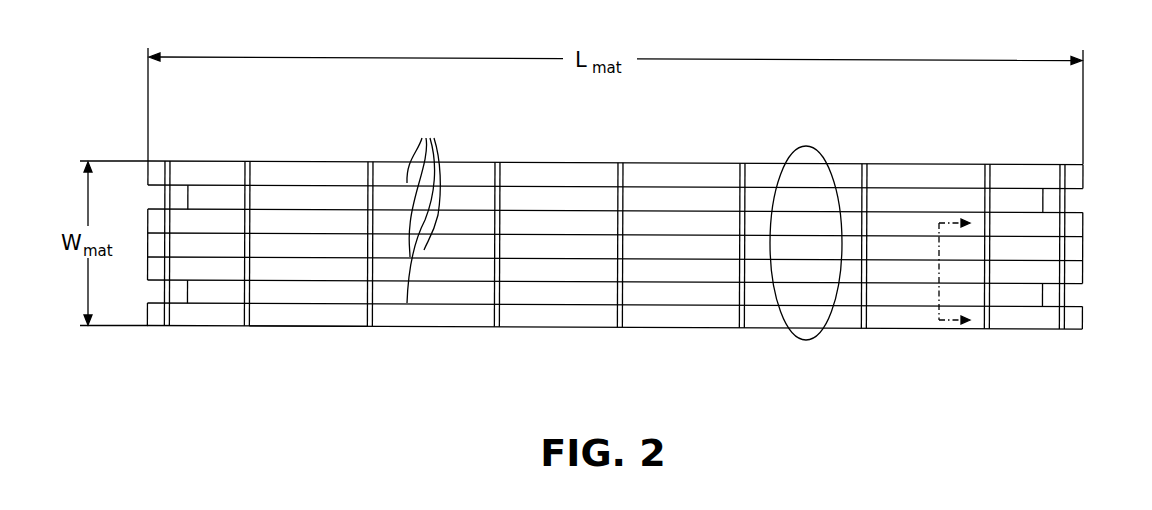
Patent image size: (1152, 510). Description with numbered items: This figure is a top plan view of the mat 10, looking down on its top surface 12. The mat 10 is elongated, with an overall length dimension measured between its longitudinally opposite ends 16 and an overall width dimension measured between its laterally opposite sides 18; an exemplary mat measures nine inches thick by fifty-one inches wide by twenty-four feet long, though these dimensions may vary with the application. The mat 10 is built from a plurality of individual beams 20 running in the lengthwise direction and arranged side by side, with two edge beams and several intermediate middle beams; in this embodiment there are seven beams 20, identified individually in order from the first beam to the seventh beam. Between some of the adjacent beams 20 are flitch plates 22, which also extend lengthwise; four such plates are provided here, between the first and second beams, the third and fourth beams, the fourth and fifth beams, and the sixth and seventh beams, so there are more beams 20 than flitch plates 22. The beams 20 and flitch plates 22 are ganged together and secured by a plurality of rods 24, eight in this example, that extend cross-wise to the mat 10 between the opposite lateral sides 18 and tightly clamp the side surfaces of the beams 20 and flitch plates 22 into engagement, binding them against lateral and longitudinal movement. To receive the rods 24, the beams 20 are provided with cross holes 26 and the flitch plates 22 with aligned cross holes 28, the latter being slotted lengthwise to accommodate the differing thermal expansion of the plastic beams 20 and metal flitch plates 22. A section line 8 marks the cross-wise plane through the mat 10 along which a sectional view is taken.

The section line 8- 8 is at (954, 276).
The mat 10 is at (620, 194).
The top surface 12 is at (665, 170).
The longitudinally opposite ends 16 is at (148, 315).
The laterally opposite sides 18 is at (281, 328).
The beams 20 is at (805, 148).
The flitch plates 22 is at (423, 209).
The rods 24 is at (248, 327).
The cross holes of the beams 26 is at (362, 170).
The cross holes of the flitch plates 28 is at (378, 180).